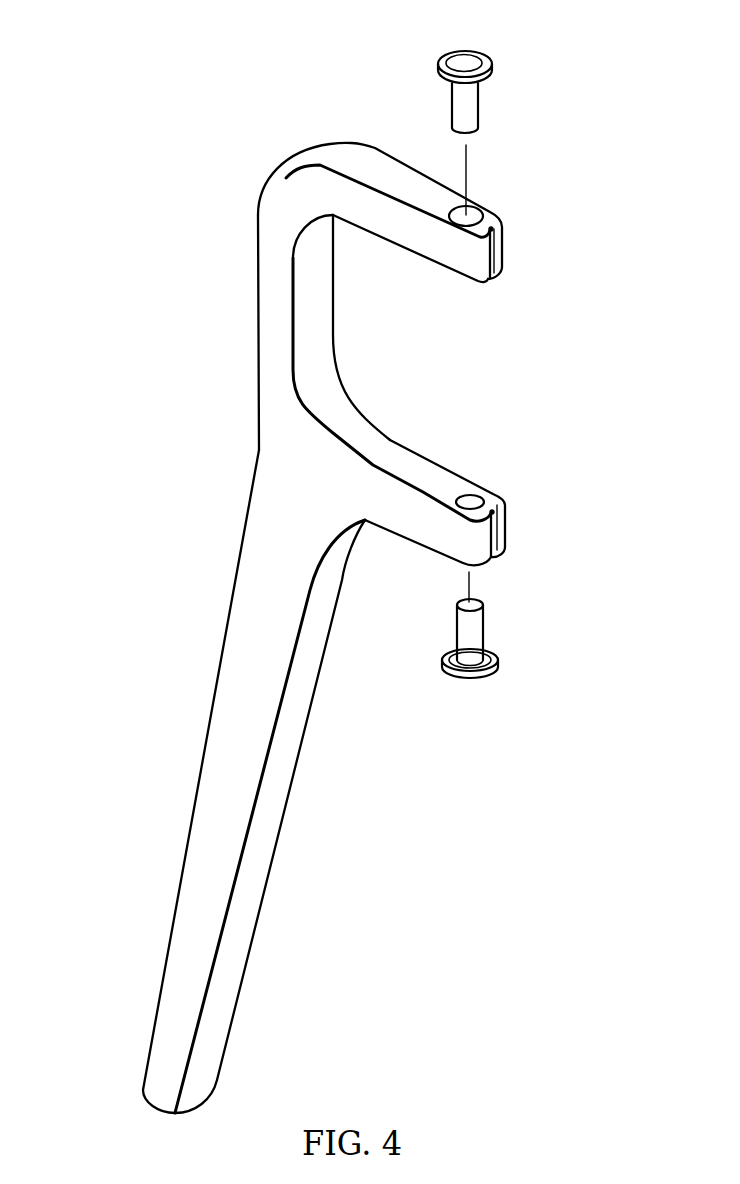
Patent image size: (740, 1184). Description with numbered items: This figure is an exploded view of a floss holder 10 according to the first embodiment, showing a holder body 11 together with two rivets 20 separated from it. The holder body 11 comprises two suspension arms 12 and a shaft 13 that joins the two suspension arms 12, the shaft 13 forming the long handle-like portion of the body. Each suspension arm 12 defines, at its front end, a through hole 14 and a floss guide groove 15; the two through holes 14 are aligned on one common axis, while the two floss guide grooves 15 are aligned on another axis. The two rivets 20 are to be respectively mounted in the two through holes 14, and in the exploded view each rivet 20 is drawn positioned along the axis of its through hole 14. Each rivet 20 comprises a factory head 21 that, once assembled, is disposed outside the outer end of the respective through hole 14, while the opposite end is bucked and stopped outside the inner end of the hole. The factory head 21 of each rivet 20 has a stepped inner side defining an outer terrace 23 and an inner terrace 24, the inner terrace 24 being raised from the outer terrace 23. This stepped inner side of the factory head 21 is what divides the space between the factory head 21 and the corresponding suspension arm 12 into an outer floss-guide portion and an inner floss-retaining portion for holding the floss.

The floss holder 10 is at (132, 275).
The holder body 11 is at (273, 470).
The suspension arm 12 is at (377, 163).
The shaft 13 is at (203, 838).
The through hole 14 is at (474, 208).
The floss guide groove 15 is at (493, 256).
The rivet 20 is at (475, 103).
The factory head 21 is at (468, 60).
The outer terrace 23 is at (492, 675).
The inner terrace 24 is at (490, 662).